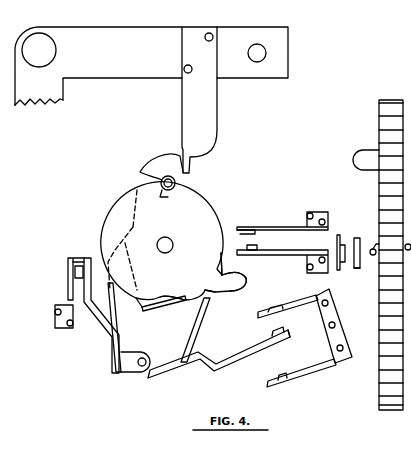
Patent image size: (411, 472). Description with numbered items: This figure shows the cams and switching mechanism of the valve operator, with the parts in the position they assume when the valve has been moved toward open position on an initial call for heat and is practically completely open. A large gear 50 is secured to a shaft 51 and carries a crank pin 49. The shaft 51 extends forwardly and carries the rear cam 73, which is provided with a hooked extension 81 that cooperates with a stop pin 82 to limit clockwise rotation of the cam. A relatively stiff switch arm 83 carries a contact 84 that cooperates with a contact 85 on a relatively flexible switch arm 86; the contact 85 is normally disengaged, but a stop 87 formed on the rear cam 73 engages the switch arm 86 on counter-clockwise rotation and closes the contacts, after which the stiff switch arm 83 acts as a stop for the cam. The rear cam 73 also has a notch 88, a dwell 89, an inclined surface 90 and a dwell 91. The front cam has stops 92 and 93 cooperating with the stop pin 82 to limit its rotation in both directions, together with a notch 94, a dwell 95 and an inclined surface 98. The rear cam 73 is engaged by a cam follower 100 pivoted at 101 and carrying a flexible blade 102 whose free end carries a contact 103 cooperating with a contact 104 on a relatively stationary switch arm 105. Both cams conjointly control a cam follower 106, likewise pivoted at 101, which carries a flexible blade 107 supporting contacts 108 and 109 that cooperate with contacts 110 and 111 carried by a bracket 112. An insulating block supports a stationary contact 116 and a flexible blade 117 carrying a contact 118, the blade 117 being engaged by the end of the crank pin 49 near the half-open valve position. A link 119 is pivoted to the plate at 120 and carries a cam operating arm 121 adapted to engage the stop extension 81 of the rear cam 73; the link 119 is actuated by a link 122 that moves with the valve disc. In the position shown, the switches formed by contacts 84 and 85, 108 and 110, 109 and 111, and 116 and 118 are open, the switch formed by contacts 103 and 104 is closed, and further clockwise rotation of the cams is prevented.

The crank pin 49 is at (356, 150).
The large gear 50 is at (379, 380).
The shaft 51 is at (174, 242).
The rear cam 73 is at (180, 218).
The hooked extension 81 is at (168, 160).
The stop pin 82 is at (187, 182).
The switch arm 83 is at (275, 227).
The contact 84 is at (237, 232).
The contact 85 is at (265, 248).
The switch arm 86 is at (283, 256).
The stop 87 is at (237, 283).
The notch 88 is at (207, 300).
The dwell 89 is at (160, 306).
The inclined surface 90 is at (117, 252).
The dwell 91 is at (128, 228).
The stop 92 is at (240, 273).
The stop 93 is at (158, 181).
The notch 94 is at (177, 303).
The dwell 95 is at (200, 290).
The inclined surface 98 is at (176, 297).
The cam follower 100 is at (120, 318).
The pivot 101 is at (137, 366).
The flexible blade 102 is at (97, 325).
The contact 103 is at (82, 258).
The contact 104 is at (72, 262).
The switch arm 105 is at (60, 300).
The cam follower 106 is at (199, 328).
The flexible blade 107 is at (236, 358).
The contact 108 is at (290, 335).
The contact 109 is at (272, 332).
The contact 110 is at (285, 377).
The contact 111 is at (282, 313).
The bracket 112 is at (346, 328).
The stationary contact 116 is at (338, 237).
The flexible blade 117 is at (358, 240).
The contact 118 is at (356, 270).
The link 119 is at (132, 60).
The pivot 120 is at (263, 45).
The cam operating arm 121 is at (212, 127).
The link 122 is at (63, 93).